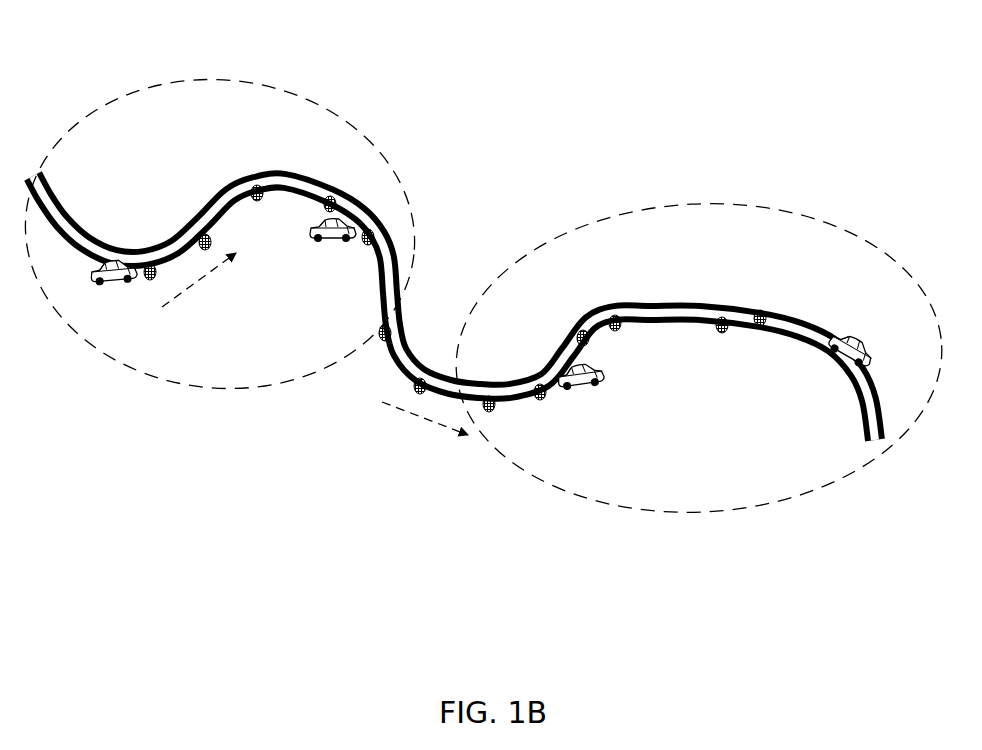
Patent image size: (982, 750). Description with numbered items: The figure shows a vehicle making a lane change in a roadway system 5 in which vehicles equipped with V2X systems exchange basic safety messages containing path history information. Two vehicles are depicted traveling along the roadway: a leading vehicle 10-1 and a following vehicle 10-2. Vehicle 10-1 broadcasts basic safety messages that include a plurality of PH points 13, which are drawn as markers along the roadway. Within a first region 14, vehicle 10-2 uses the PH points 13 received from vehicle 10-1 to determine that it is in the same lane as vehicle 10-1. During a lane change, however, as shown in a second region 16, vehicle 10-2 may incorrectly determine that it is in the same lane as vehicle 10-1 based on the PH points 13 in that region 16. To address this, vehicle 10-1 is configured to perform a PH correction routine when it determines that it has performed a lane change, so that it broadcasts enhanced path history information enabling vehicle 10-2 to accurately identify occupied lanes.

The roadway system 5 is at (722, 78).
The region 14 is at (222, 80).
The region 16 is at (728, 205).
The PH points 13 is at (761, 309).
The vehicle 10-1 is at (325, 236).
The vehicle 10-2 is at (108, 283).